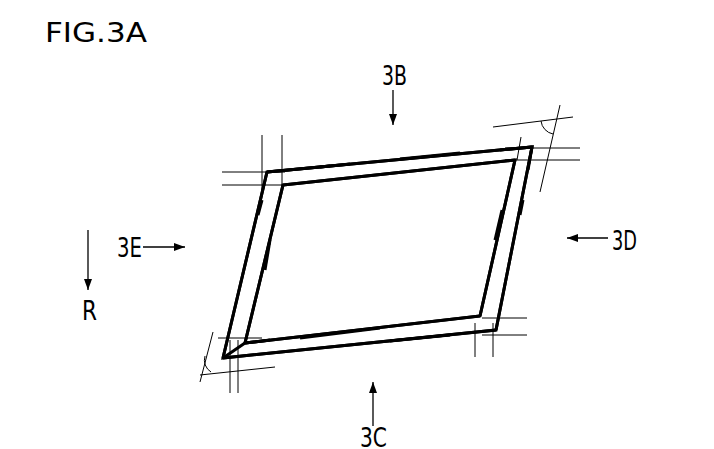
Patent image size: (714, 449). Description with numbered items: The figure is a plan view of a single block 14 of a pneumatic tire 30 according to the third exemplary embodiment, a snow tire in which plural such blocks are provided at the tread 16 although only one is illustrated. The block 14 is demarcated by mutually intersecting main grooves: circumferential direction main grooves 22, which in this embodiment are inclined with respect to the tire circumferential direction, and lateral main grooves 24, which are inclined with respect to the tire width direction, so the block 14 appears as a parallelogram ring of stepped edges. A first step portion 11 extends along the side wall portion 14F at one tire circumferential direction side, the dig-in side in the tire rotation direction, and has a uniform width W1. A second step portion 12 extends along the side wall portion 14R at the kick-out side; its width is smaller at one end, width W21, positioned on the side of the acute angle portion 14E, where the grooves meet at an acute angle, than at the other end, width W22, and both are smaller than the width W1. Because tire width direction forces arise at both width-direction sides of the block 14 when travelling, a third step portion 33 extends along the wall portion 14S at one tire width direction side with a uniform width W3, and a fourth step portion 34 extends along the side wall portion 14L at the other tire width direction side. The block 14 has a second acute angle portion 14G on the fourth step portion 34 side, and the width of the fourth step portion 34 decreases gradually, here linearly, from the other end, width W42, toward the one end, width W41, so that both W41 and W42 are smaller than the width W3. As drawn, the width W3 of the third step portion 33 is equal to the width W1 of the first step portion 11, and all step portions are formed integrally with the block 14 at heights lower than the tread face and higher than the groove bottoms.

The first step portion 11 is at (338, 334).
The second step portion 12 is at (314, 167).
The block 14 is at (506, 278).
The acute angle portion 14E is at (507, 163).
The side wall portion 14F is at (360, 346).
The acute angle portion 14G is at (250, 331).
The side wall portion 14L is at (240, 290).
The side wall portion 14R is at (372, 160).
The wall portion 14S is at (508, 242).
The tread 16 is at (332, 95).
The circumferential direction main groove 22 is at (217, 250).
The lateral main groove 24 is at (431, 136).
The pneumatic tire 30 is at (240, 78).
The third step portion 33 is at (509, 225).
The fourth step portion 34 is at (255, 258).
The width of first step portion W1 is at (525, 297).
The width of third step portion W3 is at (512, 352).
The width of one end of second step portion W21 is at (575, 130).
The width of other end of second step portion W22 is at (226, 150).
The width of one end of fourth step portion W41 is at (254, 390).
The width of other end of fourth step portion W42 is at (306, 142).